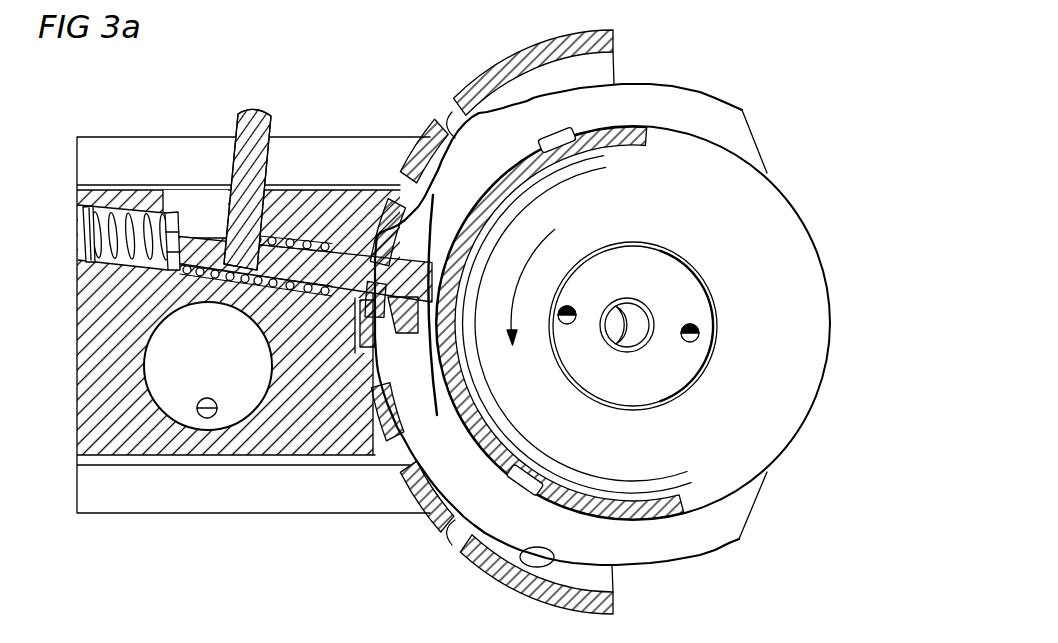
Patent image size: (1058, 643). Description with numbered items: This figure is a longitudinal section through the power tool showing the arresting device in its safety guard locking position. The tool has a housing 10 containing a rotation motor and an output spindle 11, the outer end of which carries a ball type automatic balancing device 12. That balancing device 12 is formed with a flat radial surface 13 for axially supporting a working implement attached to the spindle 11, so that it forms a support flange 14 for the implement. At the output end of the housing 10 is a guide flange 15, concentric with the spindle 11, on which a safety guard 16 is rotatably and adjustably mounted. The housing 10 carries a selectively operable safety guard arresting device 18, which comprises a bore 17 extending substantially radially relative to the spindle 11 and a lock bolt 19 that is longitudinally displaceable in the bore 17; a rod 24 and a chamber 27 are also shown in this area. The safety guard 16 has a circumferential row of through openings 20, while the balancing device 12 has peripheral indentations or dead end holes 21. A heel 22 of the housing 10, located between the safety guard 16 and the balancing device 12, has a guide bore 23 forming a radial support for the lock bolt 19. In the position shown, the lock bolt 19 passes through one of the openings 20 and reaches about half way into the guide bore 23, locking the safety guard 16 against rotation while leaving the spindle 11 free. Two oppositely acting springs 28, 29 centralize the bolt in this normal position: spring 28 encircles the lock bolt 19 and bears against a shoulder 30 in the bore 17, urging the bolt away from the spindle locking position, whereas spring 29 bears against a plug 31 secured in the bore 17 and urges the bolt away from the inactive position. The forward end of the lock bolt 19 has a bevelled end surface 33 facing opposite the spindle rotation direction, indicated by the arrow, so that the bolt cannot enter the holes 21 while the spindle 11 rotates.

The housing 10 is at (82, 331).
The output spindle 11 is at (690, 313).
The ball type automatic balancing device 12 is at (798, 206).
The flat radial surface 13 is at (741, 401).
The support flange 14 is at (812, 242).
The guide flange 15 is at (722, 112).
The safety guard 16 is at (500, 88).
The bore 17 is at (118, 212).
The safety guard arresting device 18 is at (357, 243).
The lock bolt 19 is at (277, 289).
The through openings 20 is at (450, 118).
The indentations or dead end holes 21 is at (566, 152).
The heel 22 is at (450, 266).
The guide bore 23 is at (420, 328).
The actuating rod 24 is at (265, 131).
The chamber 27 is at (191, 206).
The spring 28 is at (287, 232).
The spring 29 is at (161, 225).
The shoulder 30 is at (342, 250).
The plug 31 is at (88, 238).
The bevelled end surface 33 is at (431, 226).